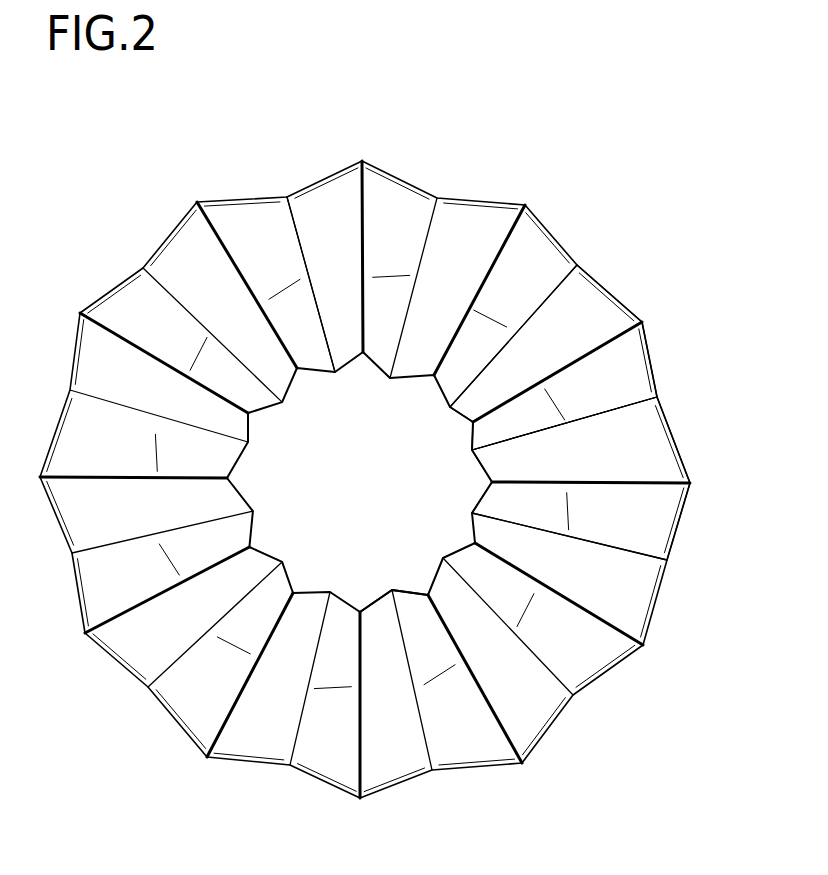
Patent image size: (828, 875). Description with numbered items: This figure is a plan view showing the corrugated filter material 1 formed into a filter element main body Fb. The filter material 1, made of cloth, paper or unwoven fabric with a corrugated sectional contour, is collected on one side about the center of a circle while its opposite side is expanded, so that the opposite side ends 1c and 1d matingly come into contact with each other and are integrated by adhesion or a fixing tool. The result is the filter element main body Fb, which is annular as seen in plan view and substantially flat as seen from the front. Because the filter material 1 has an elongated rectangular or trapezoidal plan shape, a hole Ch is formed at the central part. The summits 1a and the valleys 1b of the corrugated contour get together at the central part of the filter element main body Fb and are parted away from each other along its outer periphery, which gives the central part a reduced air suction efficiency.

The filter material 1 is at (507, 193).
The summits 1a is at (595, 347).
The valleys 1b is at (611, 405).
The side end 1c is at (643, 487).
The side end 1d is at (648, 480).
The hole Ch is at (383, 590).
The filter element main body Fb is at (265, 193).